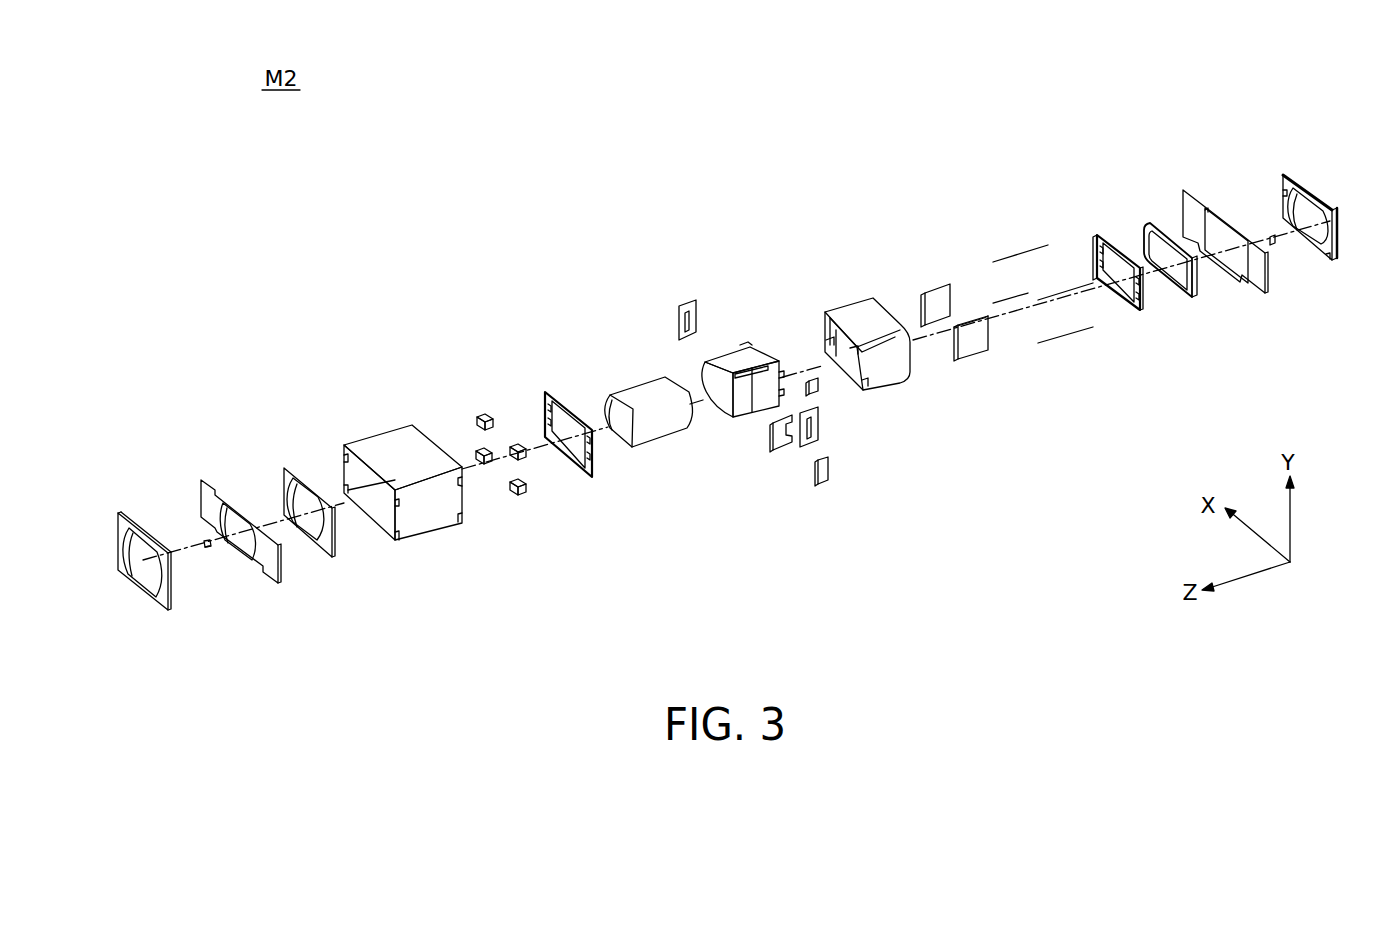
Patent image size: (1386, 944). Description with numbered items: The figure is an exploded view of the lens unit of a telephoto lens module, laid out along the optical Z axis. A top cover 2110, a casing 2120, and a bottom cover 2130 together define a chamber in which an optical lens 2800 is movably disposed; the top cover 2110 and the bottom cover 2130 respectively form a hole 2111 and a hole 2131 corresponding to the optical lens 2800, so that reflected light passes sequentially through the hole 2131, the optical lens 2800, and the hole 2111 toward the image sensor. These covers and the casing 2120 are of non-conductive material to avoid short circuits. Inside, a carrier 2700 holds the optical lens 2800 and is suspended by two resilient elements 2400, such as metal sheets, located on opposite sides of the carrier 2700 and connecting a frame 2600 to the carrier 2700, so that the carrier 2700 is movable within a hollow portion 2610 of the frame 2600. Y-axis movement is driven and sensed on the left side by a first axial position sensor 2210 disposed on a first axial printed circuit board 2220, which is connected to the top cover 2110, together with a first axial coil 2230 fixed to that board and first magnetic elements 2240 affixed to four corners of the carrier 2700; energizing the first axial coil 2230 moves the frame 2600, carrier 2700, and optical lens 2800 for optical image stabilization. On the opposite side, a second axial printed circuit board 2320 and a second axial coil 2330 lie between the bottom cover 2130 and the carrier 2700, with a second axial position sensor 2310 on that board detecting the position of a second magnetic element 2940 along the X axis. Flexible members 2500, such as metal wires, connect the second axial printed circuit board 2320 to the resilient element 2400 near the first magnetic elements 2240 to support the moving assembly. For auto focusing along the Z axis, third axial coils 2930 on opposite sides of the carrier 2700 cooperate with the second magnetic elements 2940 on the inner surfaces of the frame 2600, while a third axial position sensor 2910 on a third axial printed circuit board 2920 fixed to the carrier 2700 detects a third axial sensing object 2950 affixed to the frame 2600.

The top cover 2110 is at (122, 510).
The hole 2111 is at (148, 575).
The first axial position sensor 2210 is at (208, 548).
The first axial printed circuit board 2220 is at (201, 476).
The first axial coil 2230 is at (284, 465).
The casing 2120 is at (380, 430).
The first magnetic element 2240 is at (477, 451).
The resilient element 2400 is at (546, 389).
The optical lens 2800 is at (638, 384).
The third axial coil 2930 is at (680, 305).
The carrier 2700 is at (730, 422).
The hollow portion 2610 is at (827, 334).
The frame 2600 is at (850, 302).
The second magnetic element 2940 is at (934, 290).
The third axial sensing object 2950 is at (822, 388).
The third axial position sensor 2910 is at (830, 471).
The third axial printed circuit board 2920 is at (782, 445).
The flexible member 2500 is at (1080, 288).
The second axial coil 2330 is at (1147, 220).
The second axial printed circuit board 2320 is at (1200, 188).
The second axial position sensor 2310 is at (1275, 247).
The bottom cover 2130 is at (1288, 172).
The hole 2131 is at (1306, 206).